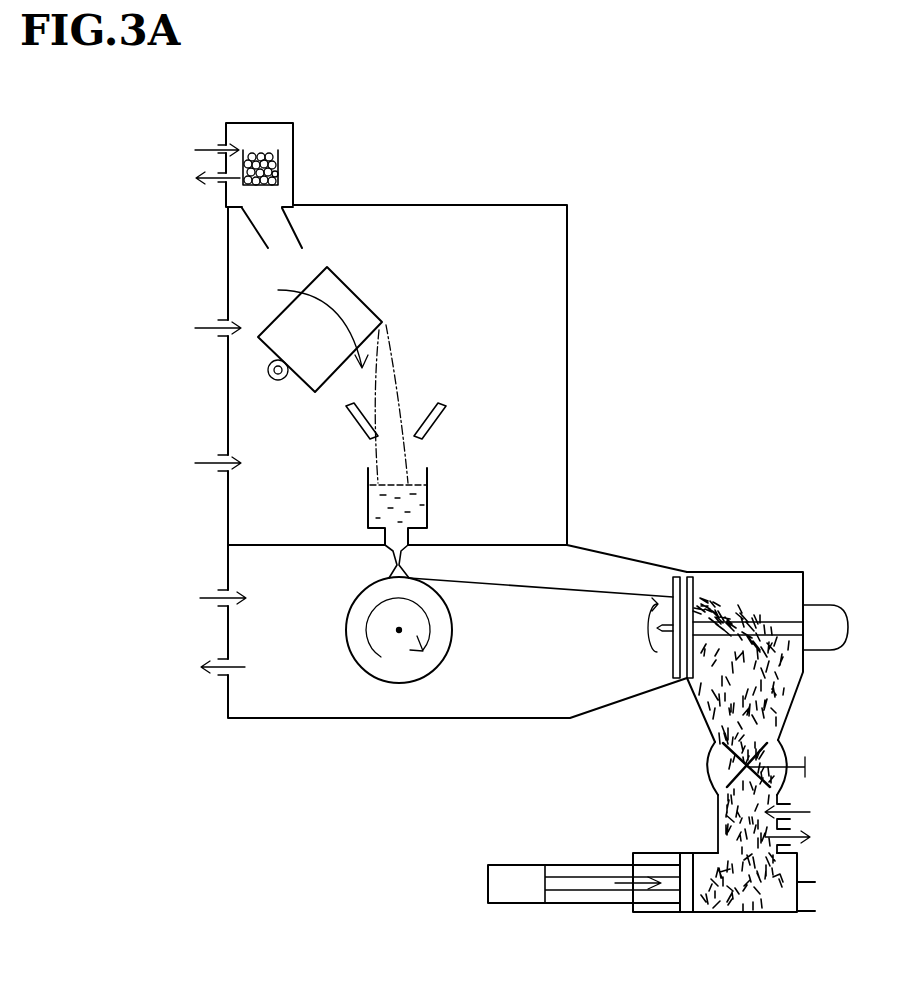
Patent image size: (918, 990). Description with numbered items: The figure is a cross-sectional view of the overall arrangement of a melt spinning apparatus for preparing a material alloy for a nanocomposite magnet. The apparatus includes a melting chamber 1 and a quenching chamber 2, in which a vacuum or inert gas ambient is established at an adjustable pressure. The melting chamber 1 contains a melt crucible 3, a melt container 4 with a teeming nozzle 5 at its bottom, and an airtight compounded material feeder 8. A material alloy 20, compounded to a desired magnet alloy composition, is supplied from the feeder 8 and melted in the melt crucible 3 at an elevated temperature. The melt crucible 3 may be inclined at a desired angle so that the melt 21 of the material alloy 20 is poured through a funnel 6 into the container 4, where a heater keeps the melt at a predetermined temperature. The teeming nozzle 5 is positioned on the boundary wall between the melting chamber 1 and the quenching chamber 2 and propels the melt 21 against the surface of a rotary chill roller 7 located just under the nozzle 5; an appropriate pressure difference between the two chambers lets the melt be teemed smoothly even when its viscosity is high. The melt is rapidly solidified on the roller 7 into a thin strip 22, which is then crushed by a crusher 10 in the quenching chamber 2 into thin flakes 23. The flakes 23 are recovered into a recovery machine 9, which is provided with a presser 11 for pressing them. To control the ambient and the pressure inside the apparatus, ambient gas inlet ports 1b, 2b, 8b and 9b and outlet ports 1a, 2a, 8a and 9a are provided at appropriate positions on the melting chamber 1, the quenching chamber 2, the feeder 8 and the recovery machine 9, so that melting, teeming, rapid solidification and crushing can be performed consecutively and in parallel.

The melting chamber 1 is at (567, 277).
The outlet port 1a is at (197, 463).
The gas inlet port 1b is at (197, 328).
The quenching chamber 2 is at (612, 555).
The outlet port 2a is at (199, 667).
The gas inlet port 2b is at (200, 598).
The melt crucible 3 is at (303, 353).
The melt container 4 is at (427, 505).
The teeming nozzle 5 is at (393, 556).
The funnel 6 is at (462, 440).
The rotary chill roller 7 is at (346, 624).
The compounded material feeder 8 is at (254, 123).
The outlet port 8a is at (195, 179).
The gas inlet port 8b is at (195, 149).
The recovery machine 9 is at (778, 572).
The outlet port 9a is at (812, 838).
The gas inlet port 9b is at (812, 811).
The crusher 10 is at (695, 585).
The presser 11 is at (578, 865).
The material alloy 20 is at (278, 163).
The melt 21 is at (368, 505).
The thin strip 22 is at (540, 592).
The thin flakes 23 is at (778, 672).